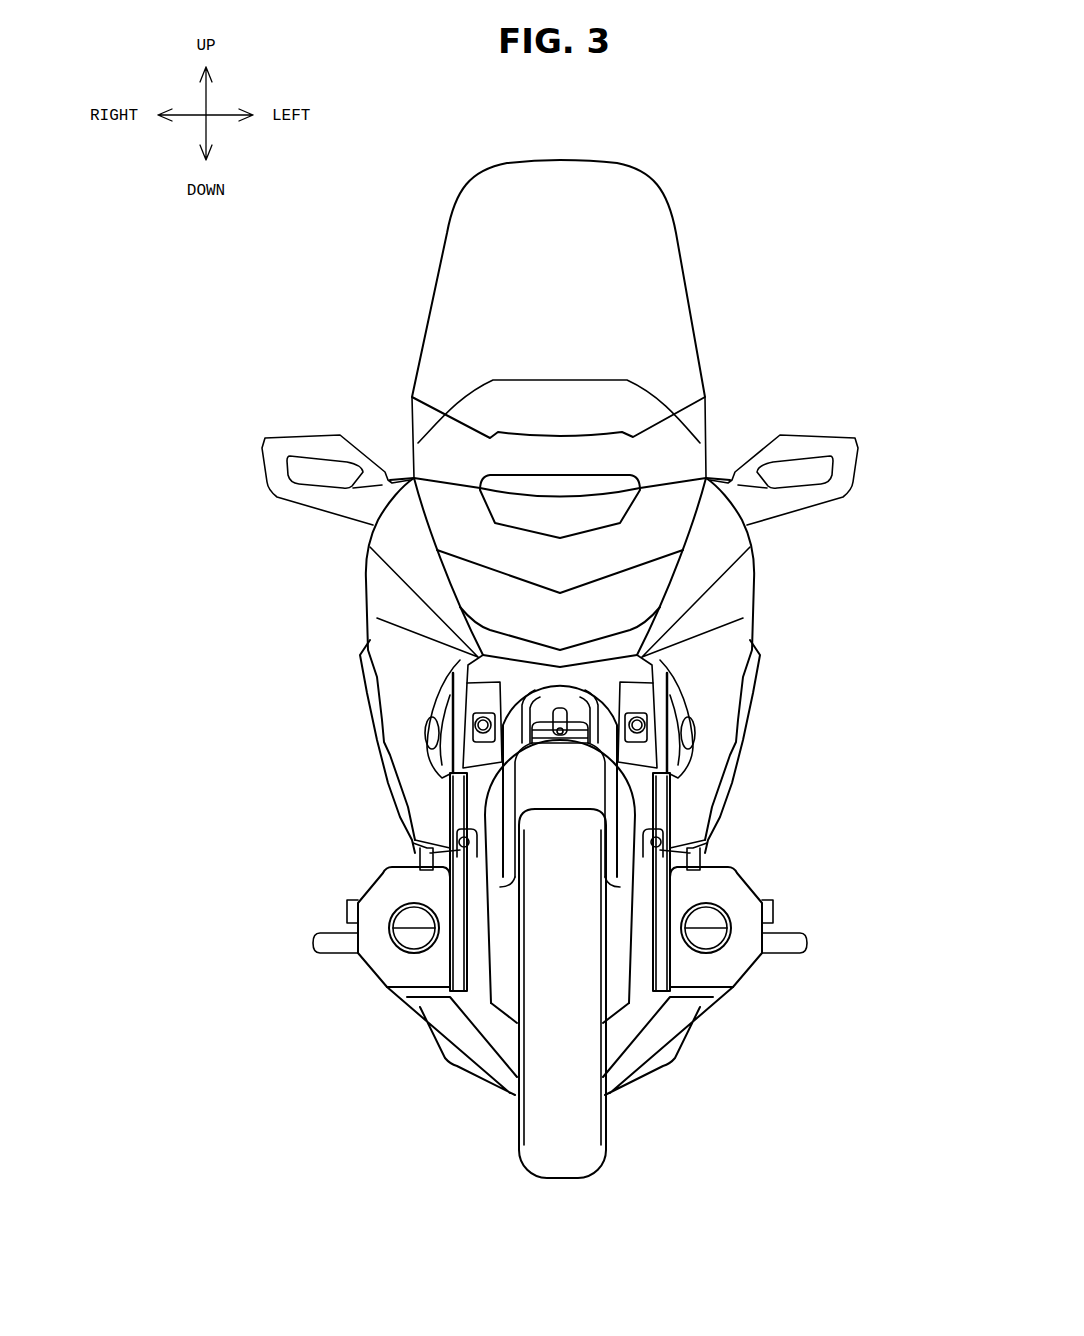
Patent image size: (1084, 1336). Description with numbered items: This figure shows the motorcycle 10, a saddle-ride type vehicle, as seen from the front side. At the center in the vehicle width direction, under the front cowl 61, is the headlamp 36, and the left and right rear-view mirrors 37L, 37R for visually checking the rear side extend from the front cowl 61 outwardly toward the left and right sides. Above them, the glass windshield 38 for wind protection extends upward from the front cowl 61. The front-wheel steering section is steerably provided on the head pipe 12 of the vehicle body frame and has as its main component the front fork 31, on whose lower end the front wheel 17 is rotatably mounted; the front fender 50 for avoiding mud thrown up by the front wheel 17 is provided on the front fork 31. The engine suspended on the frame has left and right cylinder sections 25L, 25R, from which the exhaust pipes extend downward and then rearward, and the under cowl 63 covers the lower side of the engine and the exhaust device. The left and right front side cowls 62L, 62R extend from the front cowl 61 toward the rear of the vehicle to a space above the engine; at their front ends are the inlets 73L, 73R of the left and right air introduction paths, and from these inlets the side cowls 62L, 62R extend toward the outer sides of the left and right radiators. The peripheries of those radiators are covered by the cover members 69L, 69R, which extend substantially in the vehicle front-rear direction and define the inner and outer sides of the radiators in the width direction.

The motorcycle 10 is at (702, 193).
The head pipe 12 is at (578, 696).
The front wheel 17 is at (562, 1160).
The cylinder section 25L is at (735, 885).
The cylinder section 25R is at (385, 888).
The front fork 31 is at (503, 1003).
The headlamp 36 is at (643, 592).
The rear-view mirror 37L is at (847, 445).
The rear-view mirror 37R is at (272, 453).
The glass windshield 38 is at (556, 188).
The front fender 50 is at (562, 783).
The front cowl 61 is at (672, 522).
The front side cowl 62L is at (720, 655).
The front side cowl 62R is at (405, 675).
The under cowl 63 is at (647, 1057).
The cover member 69L is at (663, 683).
The cover member 69R is at (455, 688).
The inlet 73L is at (680, 740).
The inlet 73R is at (438, 748).